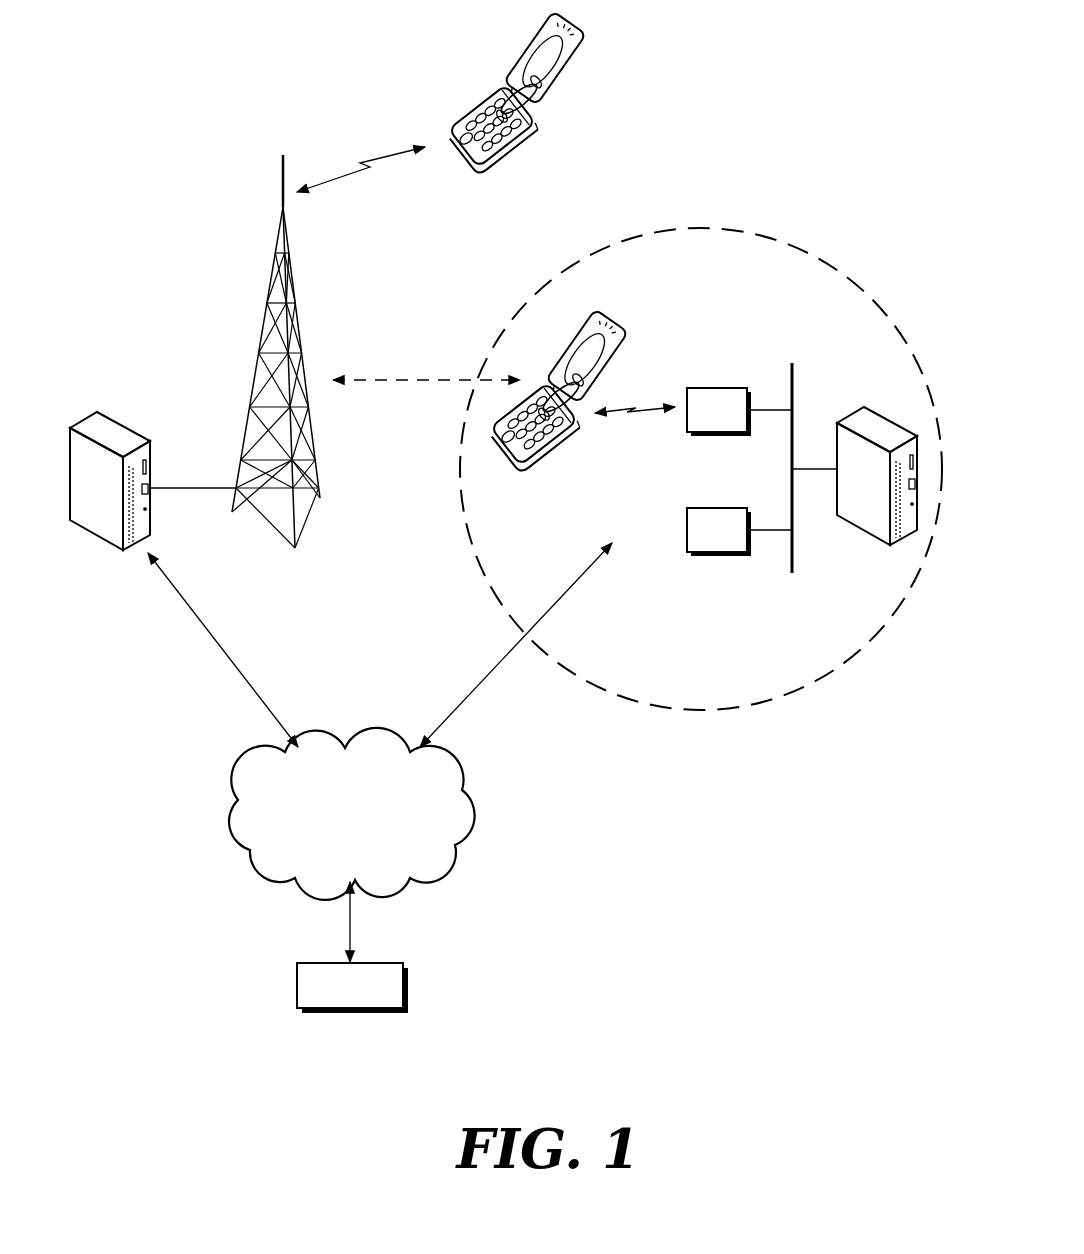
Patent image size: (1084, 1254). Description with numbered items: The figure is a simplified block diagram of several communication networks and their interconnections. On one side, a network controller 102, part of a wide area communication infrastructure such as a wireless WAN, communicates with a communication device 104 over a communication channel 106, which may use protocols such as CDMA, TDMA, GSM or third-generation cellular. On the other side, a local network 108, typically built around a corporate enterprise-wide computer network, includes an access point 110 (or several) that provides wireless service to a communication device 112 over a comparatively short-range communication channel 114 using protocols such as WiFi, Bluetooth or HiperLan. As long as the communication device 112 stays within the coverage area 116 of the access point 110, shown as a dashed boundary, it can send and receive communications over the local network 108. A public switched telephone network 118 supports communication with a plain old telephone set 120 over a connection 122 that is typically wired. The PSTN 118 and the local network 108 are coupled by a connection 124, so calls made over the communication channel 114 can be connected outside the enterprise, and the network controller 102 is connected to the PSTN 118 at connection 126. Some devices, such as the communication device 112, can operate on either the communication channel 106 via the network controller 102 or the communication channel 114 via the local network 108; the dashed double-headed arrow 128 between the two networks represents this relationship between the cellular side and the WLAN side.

The network controller 102 is at (118, 430).
The communication device 104 is at (582, 70).
The communication channel 106 is at (382, 162).
The local network 108 is at (794, 380).
The access point 110 is at (716, 436).
The communication device 112 is at (563, 440).
The communication channel 114 is at (649, 406).
The coverage area 116 is at (777, 704).
The public switched telephone network (PSTN) 118 is at (236, 850).
The plain old telephone set (POTS) 120 is at (350, 1010).
The connection 122 is at (352, 917).
The connection 124 is at (473, 686).
The connection 126 is at (233, 660).
The handoff link between cellular network and WLAN 128 is at (417, 377).